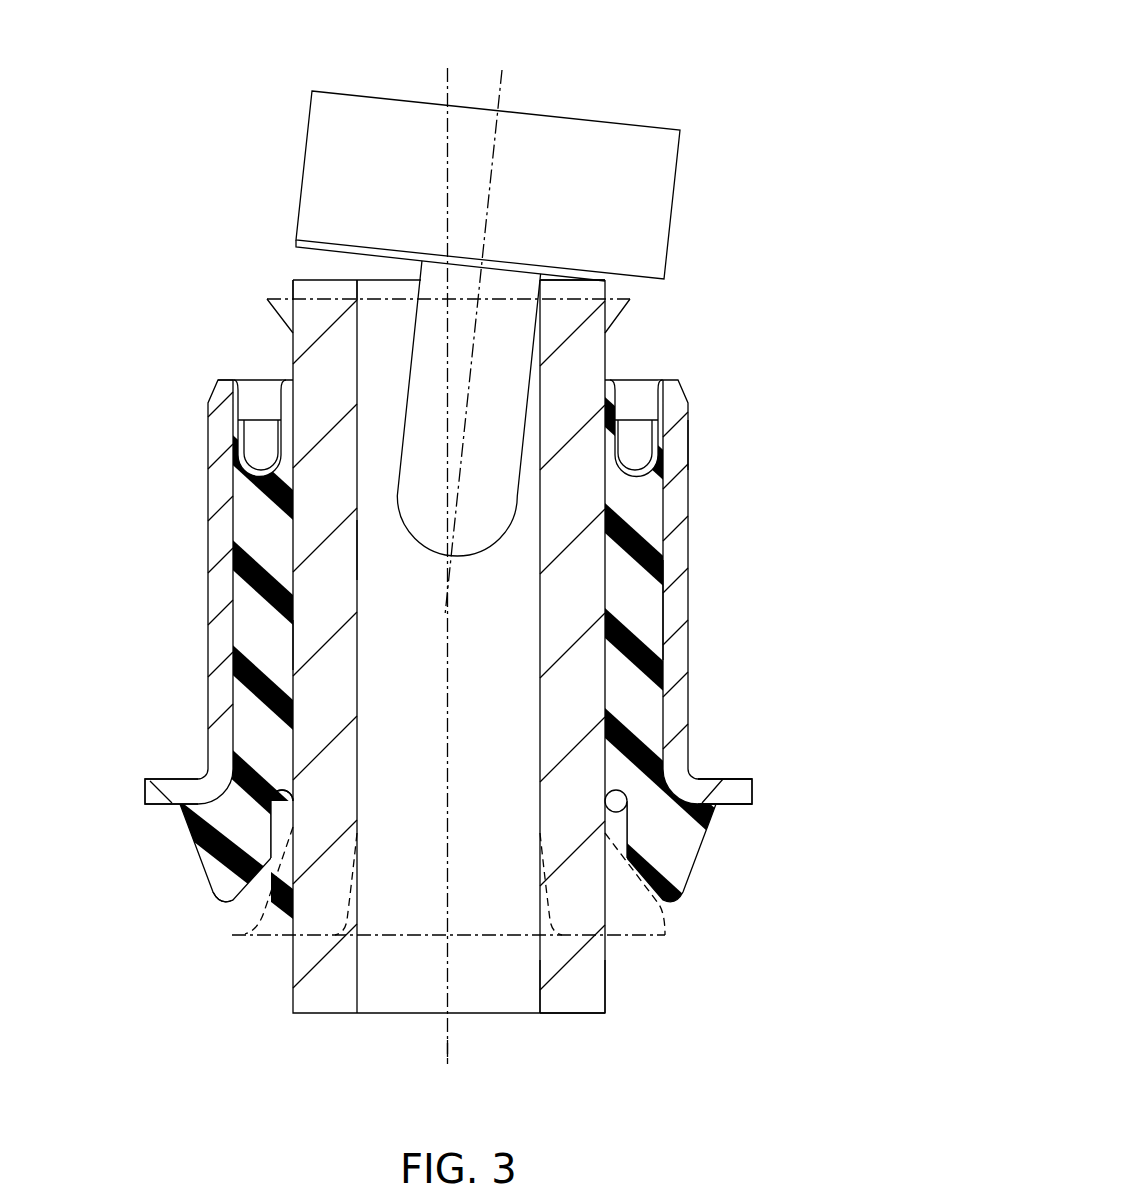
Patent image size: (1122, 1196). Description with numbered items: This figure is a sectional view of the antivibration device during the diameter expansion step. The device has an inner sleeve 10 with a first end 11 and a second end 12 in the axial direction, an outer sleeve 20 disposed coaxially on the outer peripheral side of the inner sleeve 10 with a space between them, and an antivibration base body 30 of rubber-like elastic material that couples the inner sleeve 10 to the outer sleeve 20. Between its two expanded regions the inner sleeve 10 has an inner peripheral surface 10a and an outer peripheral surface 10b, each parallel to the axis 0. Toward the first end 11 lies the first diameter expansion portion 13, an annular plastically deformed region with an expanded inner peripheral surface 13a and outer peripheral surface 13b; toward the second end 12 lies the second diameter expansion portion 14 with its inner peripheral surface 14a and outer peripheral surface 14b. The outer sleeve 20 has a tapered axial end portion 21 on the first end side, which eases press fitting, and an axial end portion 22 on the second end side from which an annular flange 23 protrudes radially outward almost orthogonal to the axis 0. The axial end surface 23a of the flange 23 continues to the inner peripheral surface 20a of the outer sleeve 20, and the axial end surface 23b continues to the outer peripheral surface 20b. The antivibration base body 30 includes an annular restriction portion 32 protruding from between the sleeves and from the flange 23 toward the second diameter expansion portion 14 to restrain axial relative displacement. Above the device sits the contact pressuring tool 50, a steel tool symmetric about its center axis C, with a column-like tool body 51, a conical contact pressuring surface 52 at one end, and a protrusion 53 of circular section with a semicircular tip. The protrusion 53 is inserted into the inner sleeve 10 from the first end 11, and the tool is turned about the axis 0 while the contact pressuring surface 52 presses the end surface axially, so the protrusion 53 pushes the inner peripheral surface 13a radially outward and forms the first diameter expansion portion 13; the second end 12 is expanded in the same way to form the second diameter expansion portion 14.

The inner sleeve 10 is at (342, 762).
The inner peripheral surface 10a is at (357, 550).
The outer peripheral surface 10b is at (280, 640).
The first end 11 is at (572, 280).
The second end 12 is at (570, 1013).
The first diameter expansion portion 13 is at (280, 305).
The inner peripheral surface 13a is at (358, 290).
The outer peripheral surface 13b is at (293, 292).
The second diameter expansion portion 14 is at (267, 910).
The inner peripheral surface 14a is at (539, 990).
The outer peripheral surface 14b is at (607, 980).
The outer sleeve 20 is at (688, 537).
The inner peripheral surface 20a is at (653, 640).
The outer peripheral surface 20b is at (688, 440).
The axial end portion 21 is at (227, 378).
The axial end portion 22 is at (210, 777).
The flange 23 is at (743, 791).
The axial end surface 23a is at (743, 806).
The axial end surface 23b is at (736, 779).
The antivibration base body 30 is at (253, 702).
The restriction portion 32 is at (228, 887).
The contact pressuring tool 50 is at (507, 324).
The tool body 51 is at (563, 135).
The contact pressuring surface 52 is at (380, 263).
The protrusion 53 is at (475, 528).
The center axis C is at (503, 86).
The axis 0 is at (447, 1050).